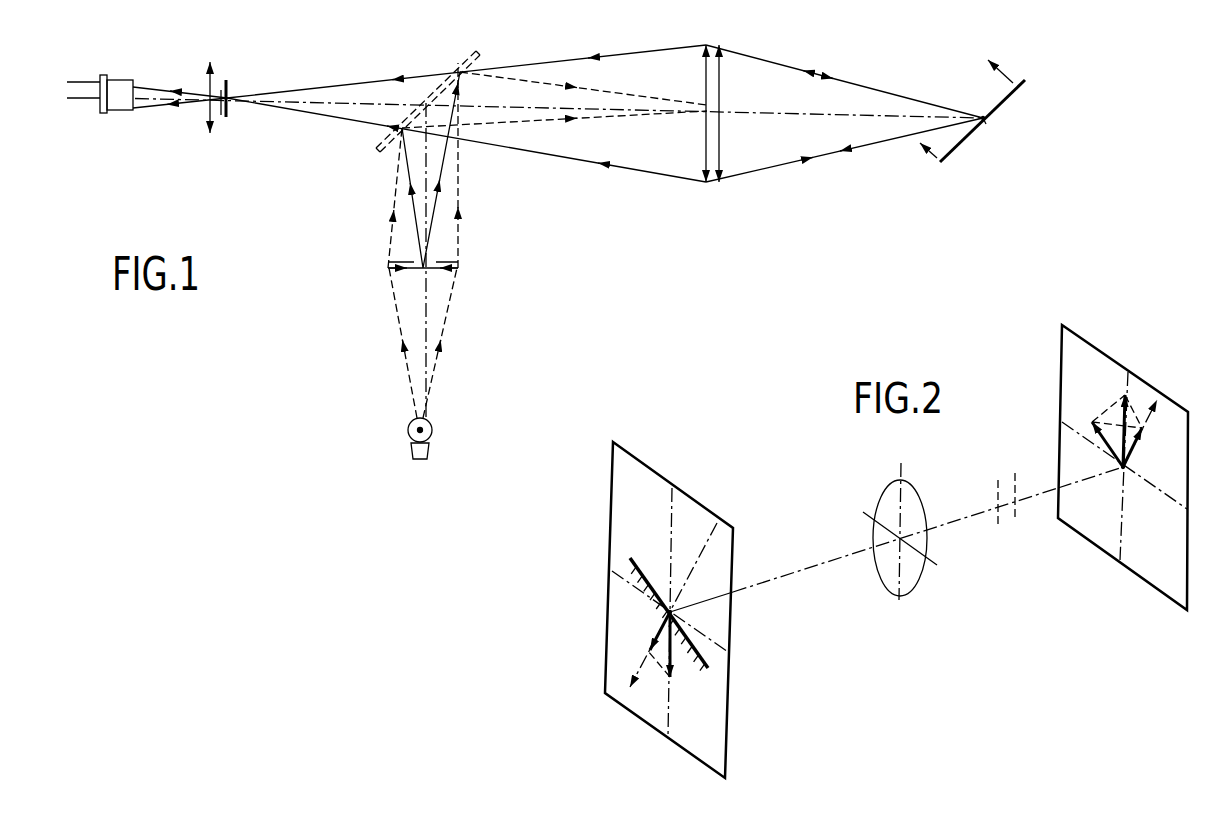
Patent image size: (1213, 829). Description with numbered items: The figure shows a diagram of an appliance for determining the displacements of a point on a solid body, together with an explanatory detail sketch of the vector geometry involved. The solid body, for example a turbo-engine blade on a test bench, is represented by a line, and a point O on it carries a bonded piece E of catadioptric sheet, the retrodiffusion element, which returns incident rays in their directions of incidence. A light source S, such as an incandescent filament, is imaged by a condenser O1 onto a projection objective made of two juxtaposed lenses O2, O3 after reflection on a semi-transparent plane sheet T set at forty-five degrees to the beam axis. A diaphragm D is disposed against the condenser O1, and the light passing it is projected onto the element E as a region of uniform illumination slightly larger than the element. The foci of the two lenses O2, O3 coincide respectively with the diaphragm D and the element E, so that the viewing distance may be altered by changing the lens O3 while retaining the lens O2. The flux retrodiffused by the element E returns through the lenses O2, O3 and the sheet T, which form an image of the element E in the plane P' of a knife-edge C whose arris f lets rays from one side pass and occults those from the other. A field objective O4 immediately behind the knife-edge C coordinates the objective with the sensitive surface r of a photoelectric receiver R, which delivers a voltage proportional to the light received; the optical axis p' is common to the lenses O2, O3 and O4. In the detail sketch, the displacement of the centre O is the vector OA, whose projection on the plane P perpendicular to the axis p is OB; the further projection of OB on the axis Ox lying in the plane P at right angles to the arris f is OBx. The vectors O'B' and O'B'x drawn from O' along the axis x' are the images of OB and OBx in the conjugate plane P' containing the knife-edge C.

In FIG. 1, the photoelectric receiver R is at (100, 82).
In FIG. 1, the sensitive surface r is at (136, 87).
In FIG. 1, the field objective O4 is at (206, 72).
In FIG. 1, the knife-edge C is at (218, 122).
In FIG. 2, the knife-edge C is at (633, 562).
In FIG. 1, the semi-transparent plane sheet T is at (456, 66).
In FIG. 1, the plane P is at (444, 170).
In FIG. 2, the plane P is at (1123, 467).
In FIG. 1, the plane P' is at (554, 111).
In FIG. 2, the plane P' is at (669, 610).
In FIG. 1, the objective lens O2 is at (710, 152).
In FIG. 2, the objective lens O2 is at (900, 551).
In FIG. 1, the objective lens O3 is at (710, 152).
In FIG. 2, the objective lens O3 is at (900, 576).
In FIG. 1, the retrodiffusion element E is at (981, 114).
In FIG. 1, the point O is at (992, 130).
In FIG. 2, the point O is at (1132, 484).
In FIG. 1, the diaphragm D is at (430, 264).
In FIG. 1, the condenser O1 is at (435, 270).
In FIG. 1, the light source S is at (432, 430).
In FIG. 2, the arris f is at (665, 600).
In FIG. 2, the point O' is at (651, 612).
In FIG. 2, the point B'x is at (643, 644).
In FIG. 2, the point B' is at (681, 657).
In FIG. 2, the axis x' is at (672, 620).
In FIG. 2, the optical axis p' is at (803, 583).
In FIG. 2, the optical axis p is at (1013, 502).
In FIG. 2, the point A is at (1109, 431).
In FIG. 2, the point B is at (1133, 425).
In FIG. 2, the axis Ox x is at (1147, 432).
In FIG. 2, the point Bx is at (1148, 431).